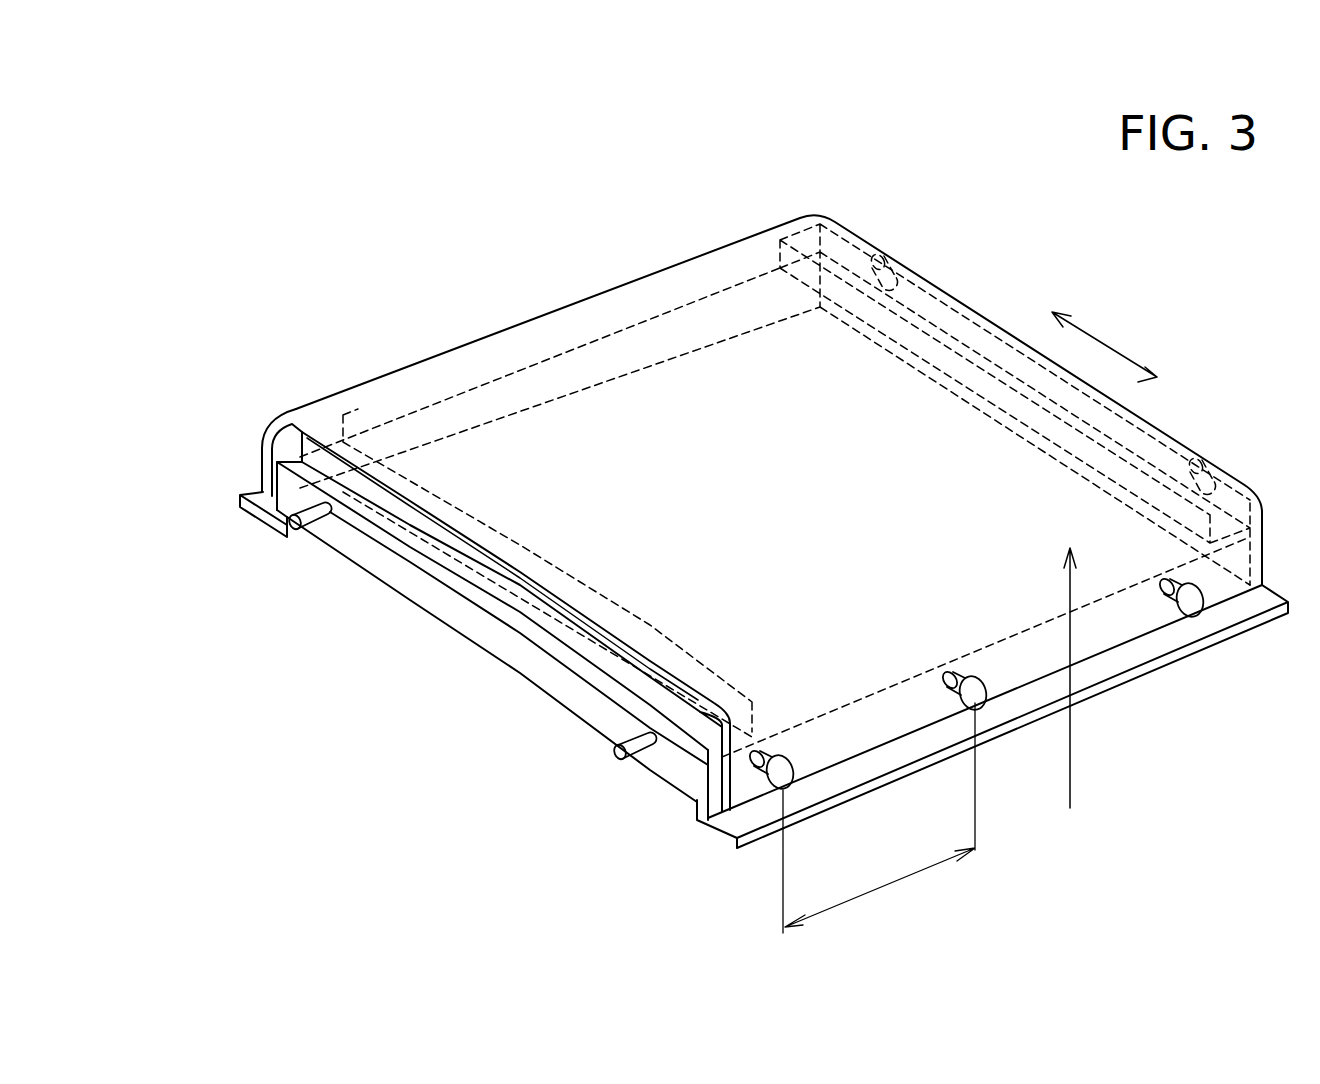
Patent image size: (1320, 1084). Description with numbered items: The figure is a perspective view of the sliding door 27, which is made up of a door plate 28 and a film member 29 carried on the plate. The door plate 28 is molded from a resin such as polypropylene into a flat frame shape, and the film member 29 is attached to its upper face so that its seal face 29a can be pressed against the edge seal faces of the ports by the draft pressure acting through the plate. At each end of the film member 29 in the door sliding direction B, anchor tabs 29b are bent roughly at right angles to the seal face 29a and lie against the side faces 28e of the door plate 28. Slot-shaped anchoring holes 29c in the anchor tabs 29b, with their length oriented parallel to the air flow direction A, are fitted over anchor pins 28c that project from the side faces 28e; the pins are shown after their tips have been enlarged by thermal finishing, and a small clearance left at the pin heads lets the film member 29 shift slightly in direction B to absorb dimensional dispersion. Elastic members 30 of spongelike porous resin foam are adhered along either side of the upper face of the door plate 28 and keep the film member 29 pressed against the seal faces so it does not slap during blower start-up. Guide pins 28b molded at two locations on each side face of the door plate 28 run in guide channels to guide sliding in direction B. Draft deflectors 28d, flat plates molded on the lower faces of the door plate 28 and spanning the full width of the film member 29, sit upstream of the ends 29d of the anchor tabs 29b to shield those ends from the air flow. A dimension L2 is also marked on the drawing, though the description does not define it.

The sliding door 27 is at (1166, 412).
The door plate 28 is at (420, 590).
The guide pins 28b is at (322, 530).
The anchor pins 28c is at (787, 775).
The draft deflectors 28d is at (253, 497).
The side faces 28e is at (262, 520).
The film member 29 is at (582, 300).
The seal face 29a is at (672, 440).
The anchor tabs 29b is at (262, 450).
The anchoring holes 29c is at (748, 845).
The ends of the anchor tabs 29d is at (1080, 667).
The elastic members 30 is at (478, 575).
The air flow direction A is at (1072, 786).
The door sliding direction B is at (1097, 338).
The distance L2 is at (879, 818).